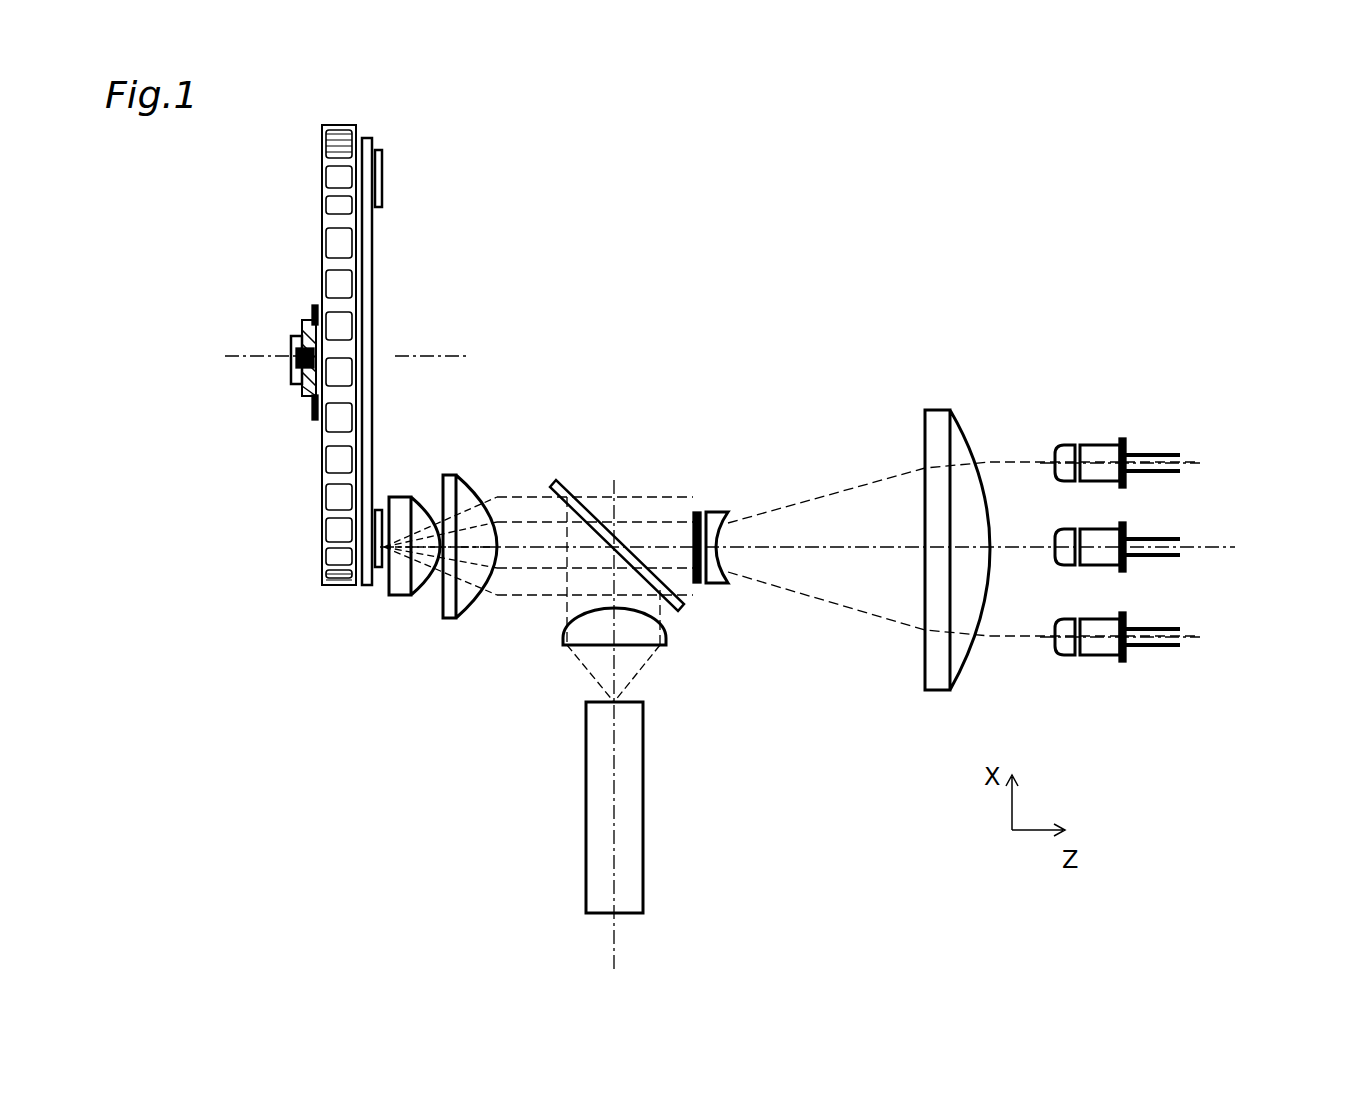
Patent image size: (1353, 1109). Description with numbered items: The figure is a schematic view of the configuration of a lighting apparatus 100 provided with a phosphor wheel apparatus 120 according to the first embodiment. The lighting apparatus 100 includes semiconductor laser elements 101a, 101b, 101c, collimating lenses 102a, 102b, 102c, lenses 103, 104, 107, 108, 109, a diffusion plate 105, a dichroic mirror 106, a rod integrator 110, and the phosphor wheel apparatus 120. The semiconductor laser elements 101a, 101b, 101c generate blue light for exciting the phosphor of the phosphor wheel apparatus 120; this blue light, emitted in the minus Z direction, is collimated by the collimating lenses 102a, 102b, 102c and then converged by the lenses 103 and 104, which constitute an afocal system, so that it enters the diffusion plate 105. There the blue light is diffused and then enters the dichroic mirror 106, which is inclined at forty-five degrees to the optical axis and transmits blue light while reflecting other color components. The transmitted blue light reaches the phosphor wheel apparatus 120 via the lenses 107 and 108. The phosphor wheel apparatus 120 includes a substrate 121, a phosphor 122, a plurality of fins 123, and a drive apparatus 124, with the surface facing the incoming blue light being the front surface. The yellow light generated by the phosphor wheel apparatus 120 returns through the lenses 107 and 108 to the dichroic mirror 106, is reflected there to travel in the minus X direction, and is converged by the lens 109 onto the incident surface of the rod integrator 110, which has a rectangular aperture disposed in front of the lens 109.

The lighting apparatus 100 is at (822, 234).
The semiconductor laser element 101a is at (1135, 450).
The semiconductor laser element 101b is at (1133, 562).
The semiconductor laser element 101c is at (1135, 657).
The collimating lens 102a is at (1078, 447).
The collimating lens 102b is at (1088, 567).
The collimating lens 102c is at (1070, 657).
The lens 103 is at (932, 405).
The lens 104 is at (718, 510).
The diffusion plate 105 is at (693, 512).
The dichroic mirror 106 is at (588, 505).
The lens 107 is at (450, 620).
The lens 108 is at (395, 597).
The lens 109 is at (575, 648).
The rod integrator 110 is at (597, 838).
The phosphor wheel apparatus 120 is at (341, 353).
The substrate 121 is at (378, 262).
The phosphor 122 is at (385, 178).
The fins 123 is at (312, 538).
The drive apparatus 124 is at (298, 332).